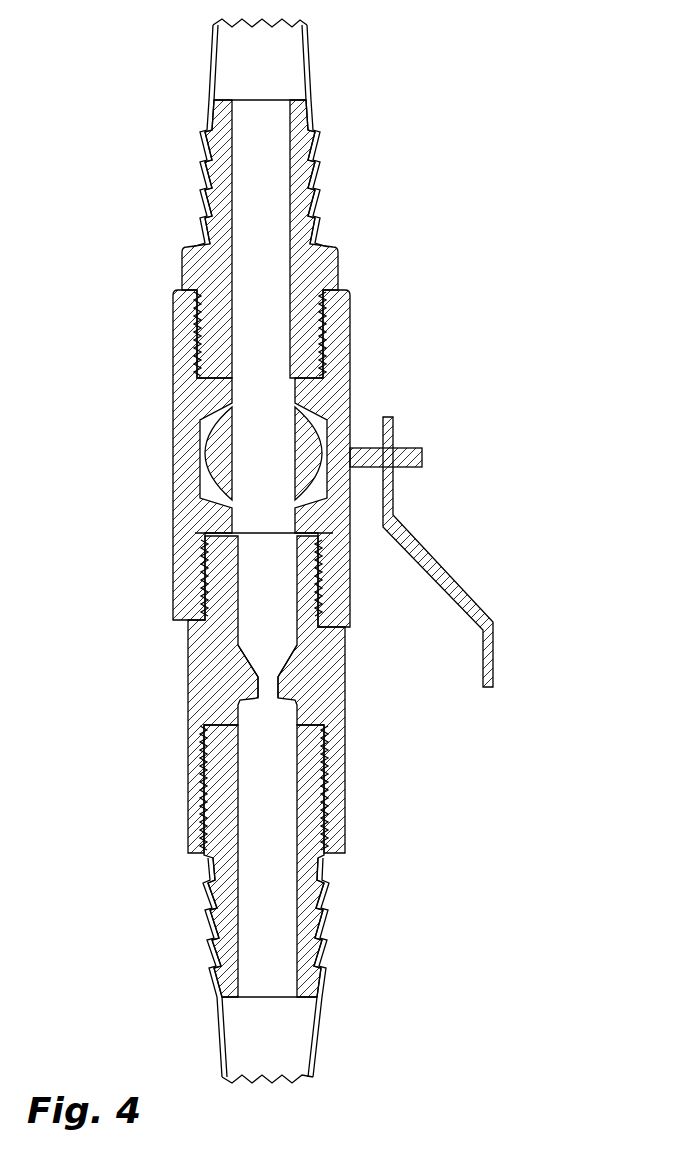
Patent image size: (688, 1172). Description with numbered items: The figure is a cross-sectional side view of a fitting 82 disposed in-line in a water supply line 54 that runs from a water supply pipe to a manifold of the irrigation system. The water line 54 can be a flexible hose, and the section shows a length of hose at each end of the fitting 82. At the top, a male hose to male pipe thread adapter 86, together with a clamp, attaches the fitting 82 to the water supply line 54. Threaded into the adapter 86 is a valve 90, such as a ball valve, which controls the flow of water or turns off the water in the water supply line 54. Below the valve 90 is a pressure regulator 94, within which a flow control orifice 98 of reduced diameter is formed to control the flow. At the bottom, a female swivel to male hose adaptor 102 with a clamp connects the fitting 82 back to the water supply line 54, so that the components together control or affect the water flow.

The water line 54 is at (295, 68).
The fitting 82 is at (364, 274).
The male hose to male pipe thread adapter 86 is at (200, 267).
The valve 90 is at (342, 395).
The pressure regulator 94 is at (208, 642).
The flow control orifice 98 is at (285, 690).
The female swivel to male hose adaptor 102 is at (208, 832).